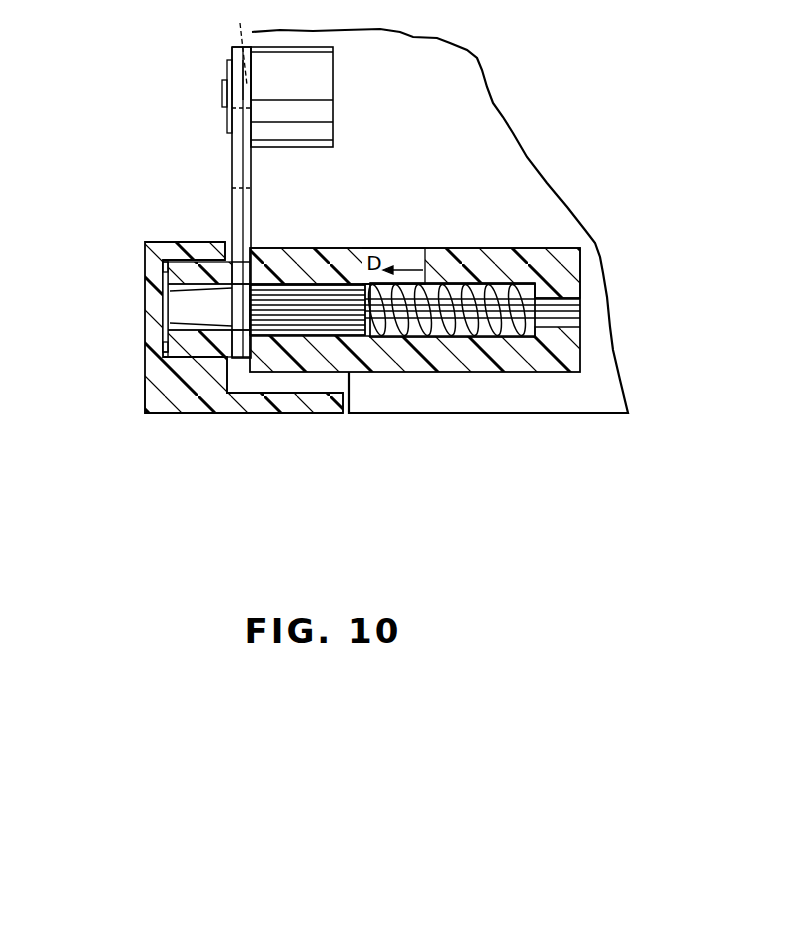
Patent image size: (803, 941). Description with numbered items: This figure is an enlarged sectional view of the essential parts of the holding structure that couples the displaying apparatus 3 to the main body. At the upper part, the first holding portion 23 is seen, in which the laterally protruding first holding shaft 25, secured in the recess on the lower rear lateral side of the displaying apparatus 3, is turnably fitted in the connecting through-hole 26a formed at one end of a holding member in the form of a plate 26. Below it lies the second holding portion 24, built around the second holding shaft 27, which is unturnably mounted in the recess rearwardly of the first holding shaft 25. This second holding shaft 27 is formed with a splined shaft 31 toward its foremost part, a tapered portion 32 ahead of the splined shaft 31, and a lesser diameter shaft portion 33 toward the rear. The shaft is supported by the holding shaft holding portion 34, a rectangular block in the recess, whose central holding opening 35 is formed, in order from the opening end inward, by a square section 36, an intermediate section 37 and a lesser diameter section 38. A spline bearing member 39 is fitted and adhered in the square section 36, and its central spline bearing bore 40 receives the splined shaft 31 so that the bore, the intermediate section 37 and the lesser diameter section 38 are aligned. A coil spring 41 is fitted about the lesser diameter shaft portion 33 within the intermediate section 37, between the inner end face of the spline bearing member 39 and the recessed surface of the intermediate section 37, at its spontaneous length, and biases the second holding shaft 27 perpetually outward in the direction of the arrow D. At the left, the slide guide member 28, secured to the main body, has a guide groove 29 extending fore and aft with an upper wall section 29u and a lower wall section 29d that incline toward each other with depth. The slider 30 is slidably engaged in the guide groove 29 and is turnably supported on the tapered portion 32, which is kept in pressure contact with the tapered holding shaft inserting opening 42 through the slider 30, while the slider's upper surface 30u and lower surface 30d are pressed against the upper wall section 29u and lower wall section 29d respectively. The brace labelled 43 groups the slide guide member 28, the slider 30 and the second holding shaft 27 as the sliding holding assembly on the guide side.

The displaying apparatus 3 is at (437, 50).
The first holding portion 23 is at (225, 43).
The second holding portion 24 is at (316, 424).
The first holding shaft 25 is at (222, 88).
The plate 26 is at (231, 145).
The connecting through-hole 26a is at (252, 50).
The second holding shaft 27 is at (345, 183).
The slide guide member 28 is at (145, 262).
The guide groove 29 is at (163, 303).
The upper wall section 29u is at (175, 263).
The lower wall section 29d is at (170, 355).
The slider 30 is at (218, 260).
The upper surface 30u is at (215, 260).
The lower surface 30d is at (196, 358).
The splined shaft 31 is at (322, 290).
The tapered portion 32 is at (247, 250).
The lesser diameter shaft portion 33 is at (285, 198).
The holding shaft holding portion 34 is at (460, 373).
The holding opening 35 is at (350, 486).
The square section 36 is at (360, 340).
The intermediate section 37 is at (434, 320).
The lesser diameter section 38 is at (557, 320).
The spline bearing member 39 is at (266, 398).
The spline bearing bore 40 is at (300, 394).
The coil spring 41 is at (485, 252).
The holding shaft inserting opening 42 is at (165, 395).
The block assembly 43 is at (40, 122).